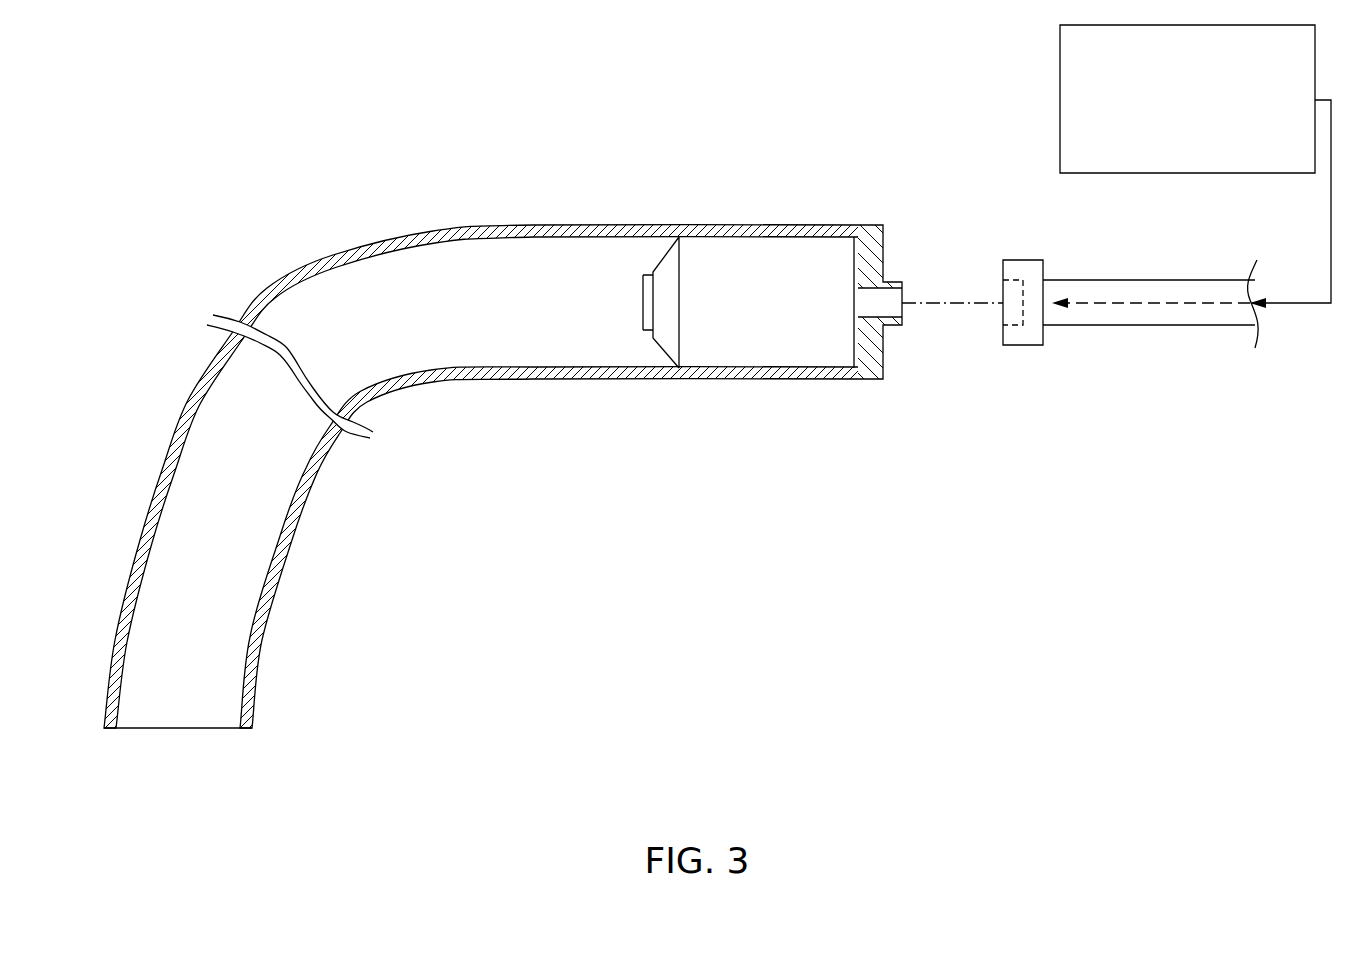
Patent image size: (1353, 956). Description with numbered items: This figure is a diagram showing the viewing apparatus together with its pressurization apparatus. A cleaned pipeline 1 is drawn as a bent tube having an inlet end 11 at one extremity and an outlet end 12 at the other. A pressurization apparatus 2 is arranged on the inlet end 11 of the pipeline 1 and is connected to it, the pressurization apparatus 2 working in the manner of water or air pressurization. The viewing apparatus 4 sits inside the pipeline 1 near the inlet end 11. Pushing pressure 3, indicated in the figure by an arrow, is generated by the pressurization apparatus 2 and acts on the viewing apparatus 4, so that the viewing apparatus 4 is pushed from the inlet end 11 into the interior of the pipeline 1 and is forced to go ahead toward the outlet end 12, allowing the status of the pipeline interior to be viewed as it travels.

The pipeline 1 is at (547, 226).
The inlet end 11 is at (893, 282).
The outlet end 12 is at (177, 728).
The pressurization apparatus 2 is at (1058, 101).
The pushing pressure 3 is at (1112, 303).
The viewing apparatus 4 is at (757, 265).